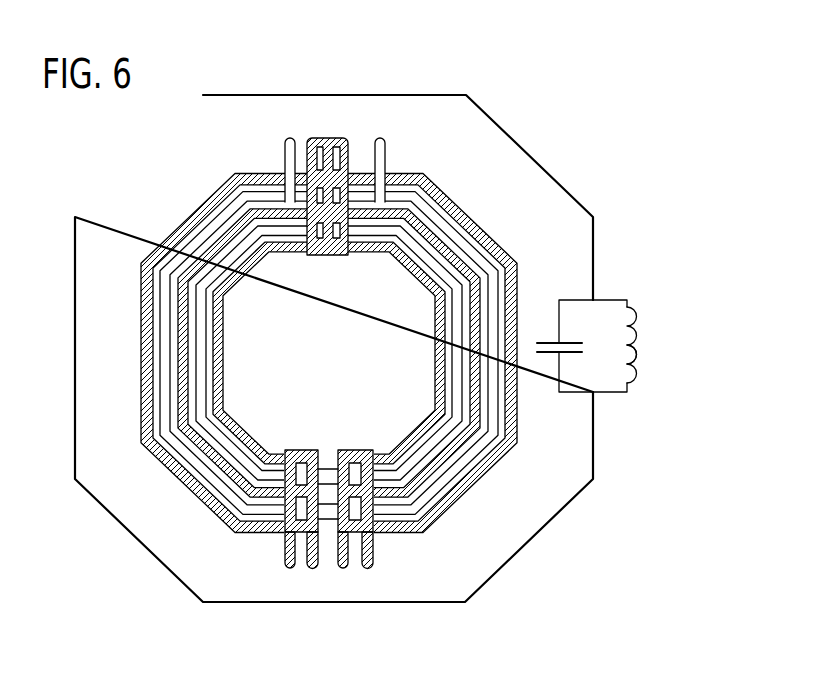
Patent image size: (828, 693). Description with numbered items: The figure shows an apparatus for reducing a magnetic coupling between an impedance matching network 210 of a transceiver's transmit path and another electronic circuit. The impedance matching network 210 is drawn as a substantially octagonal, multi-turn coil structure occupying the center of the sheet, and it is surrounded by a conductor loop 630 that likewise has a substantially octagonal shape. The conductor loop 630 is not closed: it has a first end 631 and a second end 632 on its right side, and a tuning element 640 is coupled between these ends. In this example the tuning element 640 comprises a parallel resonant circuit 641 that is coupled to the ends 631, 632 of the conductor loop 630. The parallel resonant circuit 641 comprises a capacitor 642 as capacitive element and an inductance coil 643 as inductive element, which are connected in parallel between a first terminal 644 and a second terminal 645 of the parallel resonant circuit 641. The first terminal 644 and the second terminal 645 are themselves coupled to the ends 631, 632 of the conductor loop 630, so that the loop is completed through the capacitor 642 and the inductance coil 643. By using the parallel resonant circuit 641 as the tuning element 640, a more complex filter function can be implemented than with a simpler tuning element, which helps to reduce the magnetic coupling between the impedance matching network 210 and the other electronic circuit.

The impedance matching network 210 is at (487, 470).
The conductor loop 630 is at (540, 532).
The tuning element 640 is at (630, 323).
The parallel resonant circuit 641 is at (645, 327).
The capacitor 642 is at (545, 354).
The inductance coil 643 is at (638, 353).
The end of the conductor loop 632 is at (593, 298).
The second terminal 645 is at (624, 262).
The end of the conductor loop 631 is at (593, 395).
The first terminal 644 is at (624, 447).